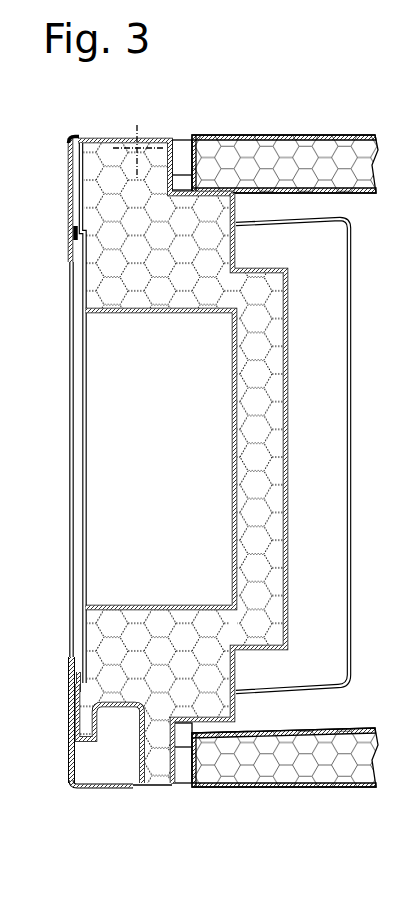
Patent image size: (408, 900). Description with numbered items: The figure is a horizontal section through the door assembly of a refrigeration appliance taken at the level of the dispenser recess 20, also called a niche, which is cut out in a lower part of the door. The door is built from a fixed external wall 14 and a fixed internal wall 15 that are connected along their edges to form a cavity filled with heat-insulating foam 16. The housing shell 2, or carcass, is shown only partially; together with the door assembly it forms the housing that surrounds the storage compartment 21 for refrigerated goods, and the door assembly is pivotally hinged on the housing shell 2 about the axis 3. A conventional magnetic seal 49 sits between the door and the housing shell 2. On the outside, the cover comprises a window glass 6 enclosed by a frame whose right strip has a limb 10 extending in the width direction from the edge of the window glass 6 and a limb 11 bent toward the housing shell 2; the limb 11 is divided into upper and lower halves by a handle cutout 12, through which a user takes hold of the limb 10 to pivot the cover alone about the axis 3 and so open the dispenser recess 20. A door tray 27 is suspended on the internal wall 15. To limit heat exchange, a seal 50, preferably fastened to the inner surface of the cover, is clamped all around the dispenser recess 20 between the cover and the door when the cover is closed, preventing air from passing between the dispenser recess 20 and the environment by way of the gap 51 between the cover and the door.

The housing shell 2 is at (268, 148).
The axis 3 is at (138, 150).
The window glass 6 is at (72, 352).
The limb 10 is at (68, 730).
The limb 11 is at (93, 786).
The handle cutout 12 is at (115, 747).
The external wall 14 is at (77, 190).
The internal wall 15 is at (237, 236).
The heat-insulating foam 16 is at (170, 248).
The dispenser recess 20 is at (178, 470).
The storage compartment 21 is at (390, 326).
The door tray 27 is at (348, 652).
The magnetic seal 49 is at (183, 150).
The seal 50 is at (78, 232).
The gap 51 is at (72, 138).